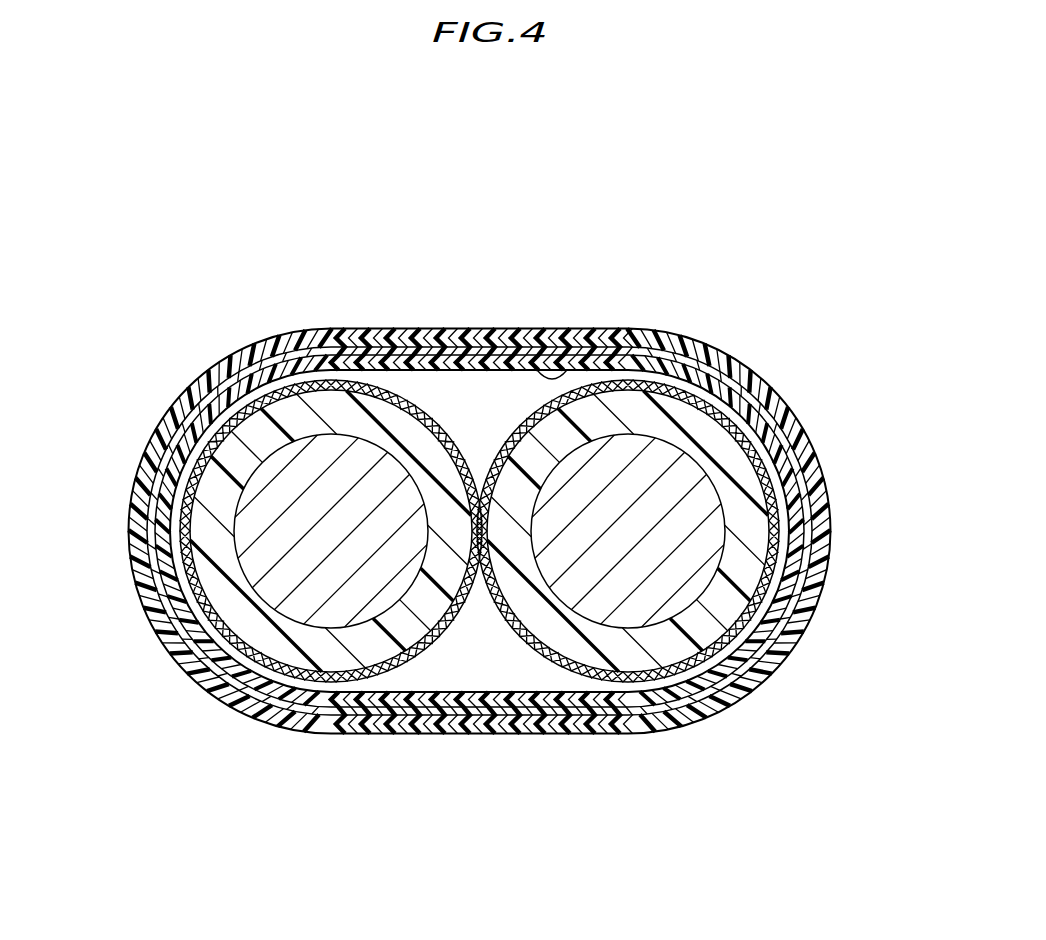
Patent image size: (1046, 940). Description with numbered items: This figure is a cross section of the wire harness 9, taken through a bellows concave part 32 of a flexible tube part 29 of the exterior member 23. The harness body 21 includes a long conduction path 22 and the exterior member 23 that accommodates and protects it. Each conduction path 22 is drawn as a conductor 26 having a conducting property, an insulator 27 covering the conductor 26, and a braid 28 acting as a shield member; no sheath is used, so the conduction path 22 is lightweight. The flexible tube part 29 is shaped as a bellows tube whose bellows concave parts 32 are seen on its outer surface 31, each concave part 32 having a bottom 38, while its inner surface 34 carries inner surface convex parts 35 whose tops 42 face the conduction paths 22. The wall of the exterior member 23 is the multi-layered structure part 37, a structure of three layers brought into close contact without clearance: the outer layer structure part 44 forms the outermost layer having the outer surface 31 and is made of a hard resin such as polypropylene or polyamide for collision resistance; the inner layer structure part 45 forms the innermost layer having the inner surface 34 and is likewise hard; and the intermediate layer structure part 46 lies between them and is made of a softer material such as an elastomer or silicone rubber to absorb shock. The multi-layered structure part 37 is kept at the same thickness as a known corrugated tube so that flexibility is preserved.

The wire harness 9 is at (488, 486).
The harness body 21 is at (545, 198).
The conduction path 22 is at (377, 236).
The exterior member 23 is at (457, 328).
The conductor 26 is at (288, 485).
The insulator 27 is at (325, 408).
The braid 28 is at (375, 388).
The flexible tube part 29 is at (480, 494).
The outer surface 31 is at (480, 494).
The bellows concave part 32 is at (480, 494).
The inner surface 34 is at (592, 304).
The inner surface convex part 35 is at (592, 304).
The multi-layered structure part 37 is at (710, 841).
The bottom 38 is at (688, 337).
The top 42 is at (560, 328).
The outer layer structure part 44 is at (596, 730).
The inner layer structure part 45 is at (630, 700).
The intermediate layer structure part 46 is at (681, 705).